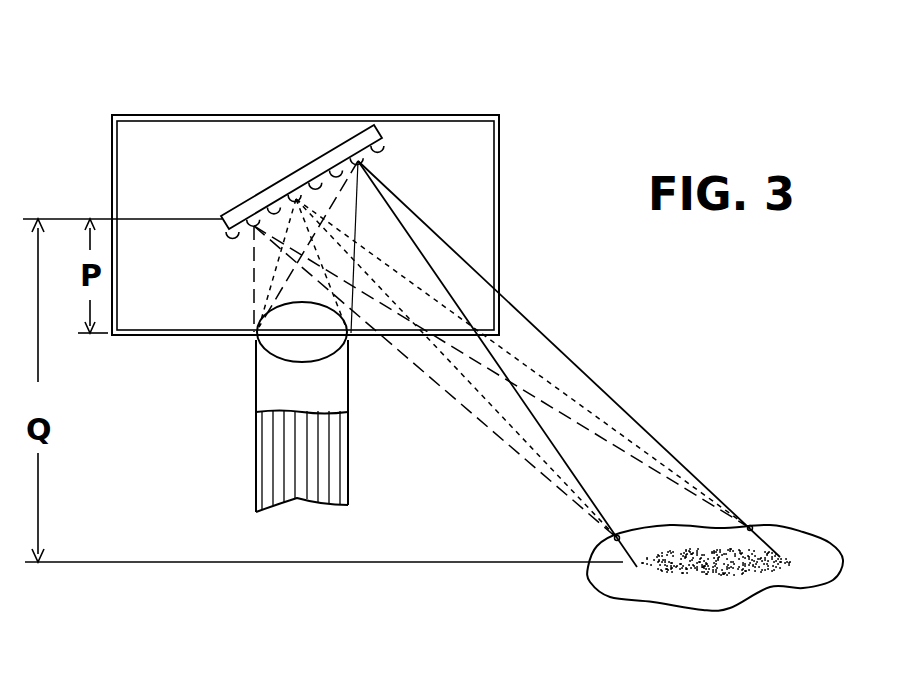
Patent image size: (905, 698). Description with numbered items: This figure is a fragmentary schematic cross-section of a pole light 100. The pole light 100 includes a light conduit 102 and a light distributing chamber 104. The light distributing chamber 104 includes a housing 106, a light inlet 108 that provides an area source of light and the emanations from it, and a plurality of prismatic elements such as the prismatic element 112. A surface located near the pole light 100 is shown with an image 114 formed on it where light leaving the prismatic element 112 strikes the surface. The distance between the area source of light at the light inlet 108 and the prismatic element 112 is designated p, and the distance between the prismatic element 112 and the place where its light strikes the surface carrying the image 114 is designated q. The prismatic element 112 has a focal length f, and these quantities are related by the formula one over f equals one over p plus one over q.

The pole light 100 is at (499, 542).
The light conduit 102 is at (362, 426).
The light distributing chamber 104 is at (305, 170).
The housing 106 is at (500, 163).
The light inlet 108 is at (250, 351).
The prismatic element 112 is at (351, 182).
The image 114 is at (716, 608).